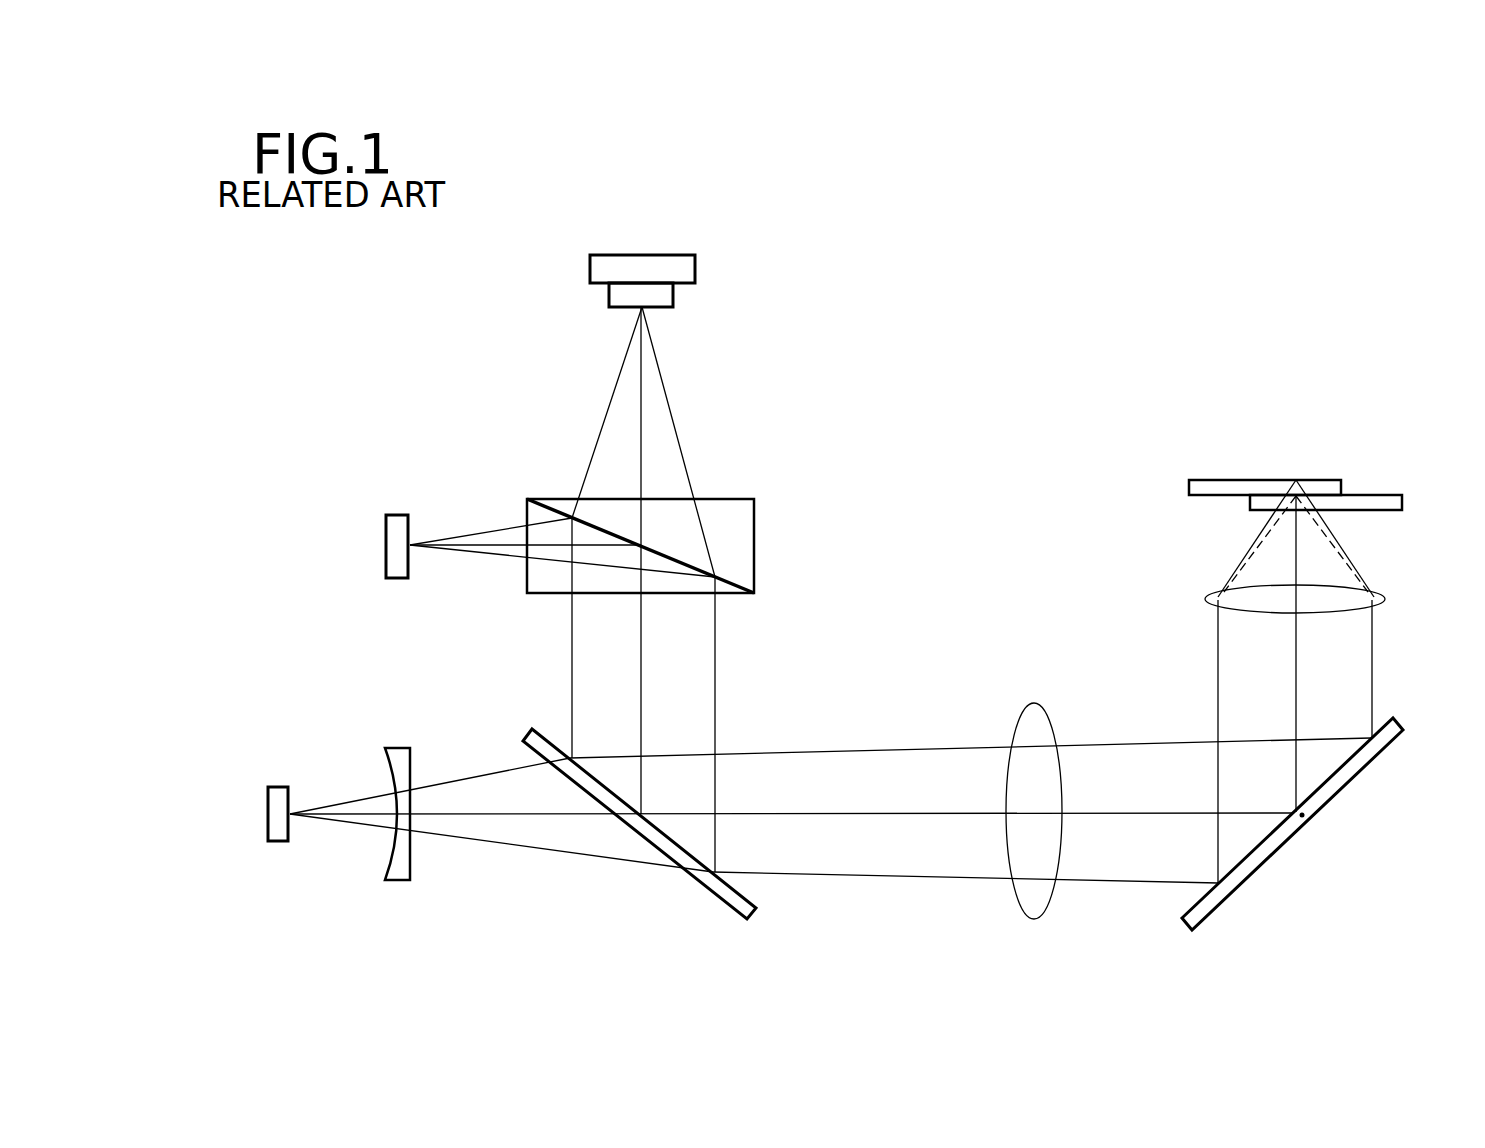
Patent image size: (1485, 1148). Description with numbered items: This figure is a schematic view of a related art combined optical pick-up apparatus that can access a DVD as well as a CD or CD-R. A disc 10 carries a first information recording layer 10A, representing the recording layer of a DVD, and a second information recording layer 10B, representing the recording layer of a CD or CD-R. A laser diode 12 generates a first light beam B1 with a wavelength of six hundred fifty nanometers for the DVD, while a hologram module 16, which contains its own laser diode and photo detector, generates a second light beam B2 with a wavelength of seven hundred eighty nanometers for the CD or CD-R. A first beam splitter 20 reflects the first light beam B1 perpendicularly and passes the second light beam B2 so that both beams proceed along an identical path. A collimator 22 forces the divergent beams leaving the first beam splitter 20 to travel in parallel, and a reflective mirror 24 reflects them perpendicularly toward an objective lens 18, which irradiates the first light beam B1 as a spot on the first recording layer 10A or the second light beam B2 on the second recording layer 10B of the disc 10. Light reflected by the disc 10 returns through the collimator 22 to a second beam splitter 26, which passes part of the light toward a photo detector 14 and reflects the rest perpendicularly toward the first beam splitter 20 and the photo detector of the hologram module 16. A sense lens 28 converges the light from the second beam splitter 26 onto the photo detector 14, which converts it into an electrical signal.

The disc 10 is at (1318, 422).
The first information recording layer 10A is at (1391, 495).
The second information recording layer 10B is at (1203, 480).
The laser diode 12 is at (386, 545).
The photo detector 14 is at (268, 790).
The hologram module 16 is at (590, 270).
The objective lens 18 is at (1381, 597).
The first beam splitter 20 is at (754, 518).
The collimator 22 is at (1035, 912).
The reflective mirror 24 is at (1200, 916).
The second beam splitter 26 is at (742, 906).
The sense lens 28 is at (398, 748).
The first light beam B1 is at (466, 532).
The second light beam B2 is at (676, 422).